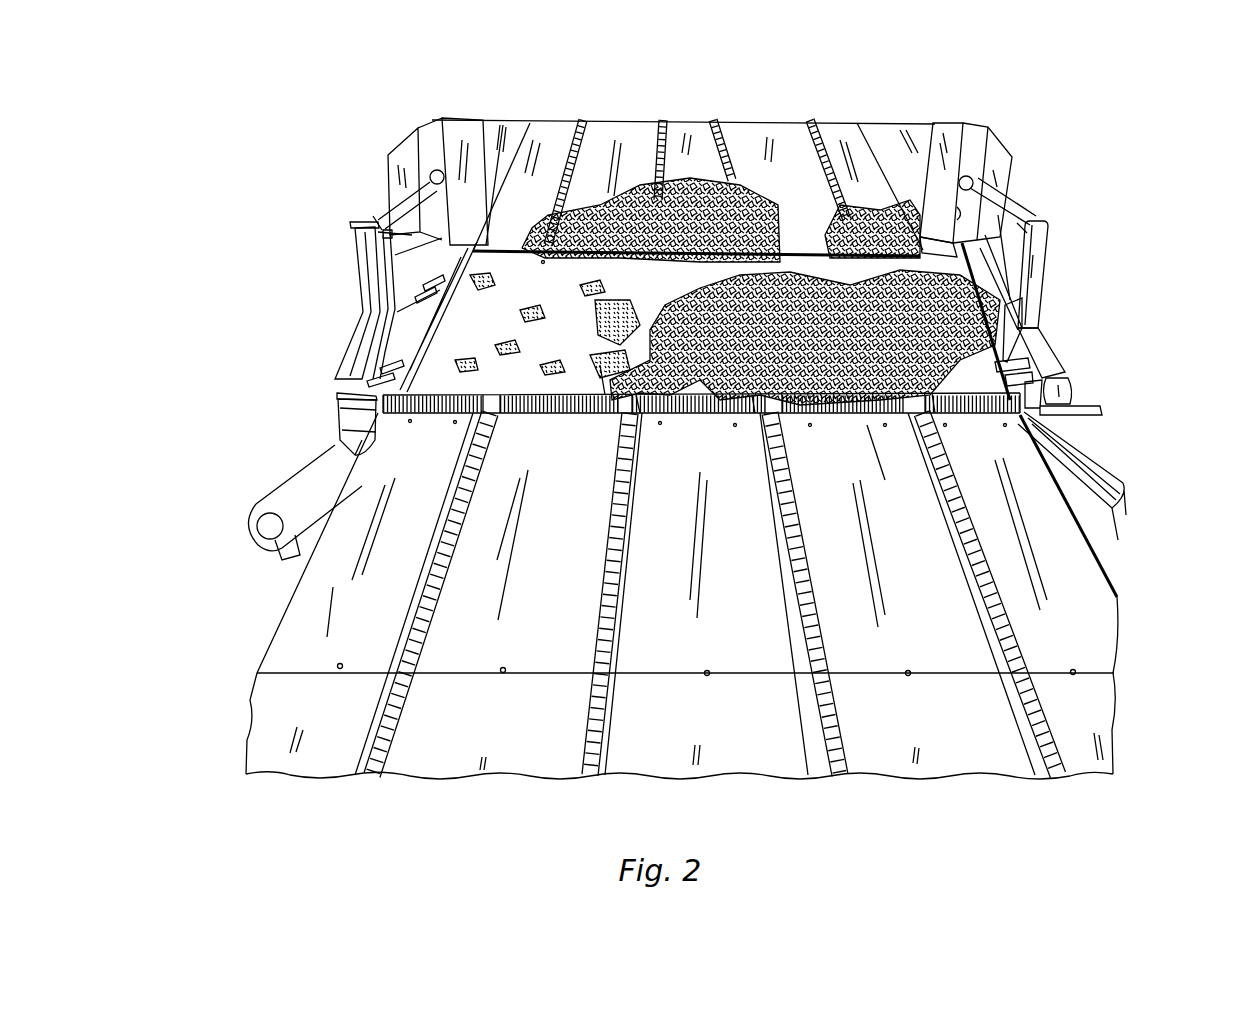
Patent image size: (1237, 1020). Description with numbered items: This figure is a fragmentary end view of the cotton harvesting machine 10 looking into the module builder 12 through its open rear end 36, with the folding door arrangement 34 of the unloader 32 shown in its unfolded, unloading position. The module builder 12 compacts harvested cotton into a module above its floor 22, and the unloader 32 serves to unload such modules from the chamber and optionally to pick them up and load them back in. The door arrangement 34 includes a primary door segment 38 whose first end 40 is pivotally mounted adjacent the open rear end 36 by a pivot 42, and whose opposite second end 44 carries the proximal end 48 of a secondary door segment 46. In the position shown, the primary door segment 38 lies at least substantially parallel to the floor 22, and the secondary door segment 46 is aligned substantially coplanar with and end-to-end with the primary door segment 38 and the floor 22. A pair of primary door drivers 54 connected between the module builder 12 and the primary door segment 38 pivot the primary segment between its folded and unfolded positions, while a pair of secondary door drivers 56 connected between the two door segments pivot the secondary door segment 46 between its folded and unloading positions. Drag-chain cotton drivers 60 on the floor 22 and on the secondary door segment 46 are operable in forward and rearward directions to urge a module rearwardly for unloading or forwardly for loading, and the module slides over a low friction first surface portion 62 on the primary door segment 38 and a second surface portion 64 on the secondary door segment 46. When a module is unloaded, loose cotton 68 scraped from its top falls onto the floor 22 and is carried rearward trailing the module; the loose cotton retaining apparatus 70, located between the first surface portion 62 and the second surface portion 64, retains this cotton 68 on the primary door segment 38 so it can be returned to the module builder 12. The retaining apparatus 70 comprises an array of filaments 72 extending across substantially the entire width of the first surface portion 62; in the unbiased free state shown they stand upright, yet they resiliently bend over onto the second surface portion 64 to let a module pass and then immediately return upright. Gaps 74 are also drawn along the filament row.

The cotton harvesting machine 10 is at (1082, 100).
The module builder 12 is at (958, 118).
The floor 22 is at (785, 140).
The unloader 32 is at (1056, 344).
The folding door arrangement 34 is at (1063, 397).
The open rear end 36 is at (490, 124).
The primary door segment 38 is at (375, 340).
The first end 40 is at (398, 302).
The pivot 42 is at (385, 250).
The second end 44 is at (375, 366).
The secondary door segment 46 is at (292, 598).
The proximal end 48 is at (342, 442).
The primary door drivers 54 is at (392, 215).
The secondary door drivers 56 is at (283, 482).
The cotton driver 60 is at (658, 130).
The first surface portion 62 is at (1076, 390).
The second surface portion 64 is at (1087, 602).
The loose cotton 68 is at (590, 205).
The loose cotton retaining apparatus 70 is at (867, 425).
The filaments 72 is at (423, 417).
The gap 74 is at (638, 425).